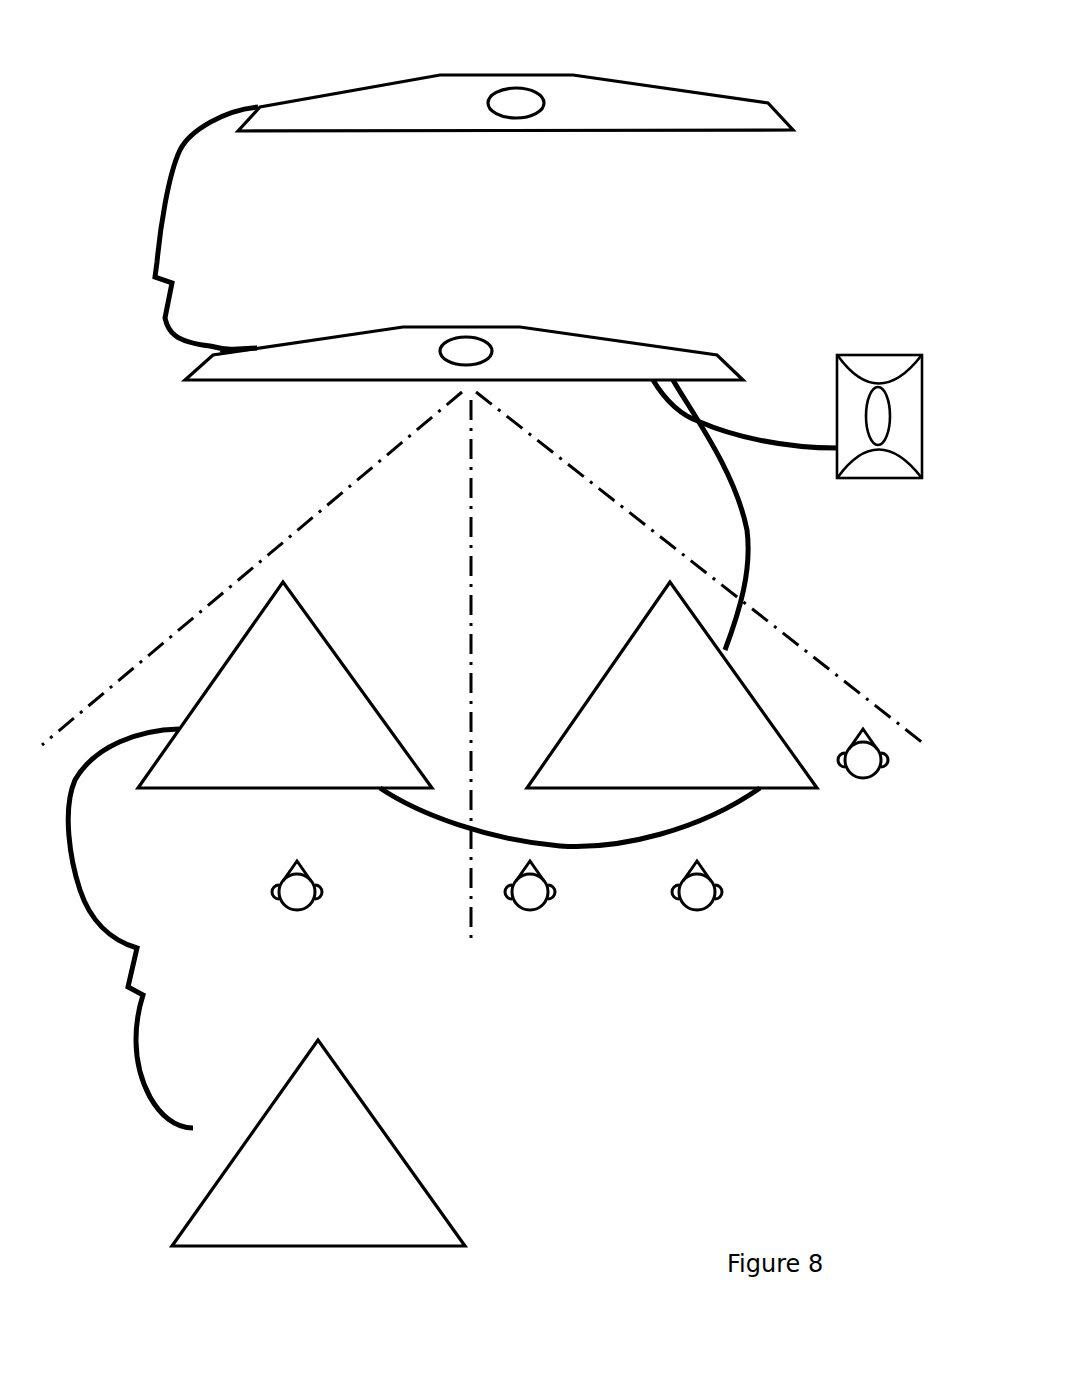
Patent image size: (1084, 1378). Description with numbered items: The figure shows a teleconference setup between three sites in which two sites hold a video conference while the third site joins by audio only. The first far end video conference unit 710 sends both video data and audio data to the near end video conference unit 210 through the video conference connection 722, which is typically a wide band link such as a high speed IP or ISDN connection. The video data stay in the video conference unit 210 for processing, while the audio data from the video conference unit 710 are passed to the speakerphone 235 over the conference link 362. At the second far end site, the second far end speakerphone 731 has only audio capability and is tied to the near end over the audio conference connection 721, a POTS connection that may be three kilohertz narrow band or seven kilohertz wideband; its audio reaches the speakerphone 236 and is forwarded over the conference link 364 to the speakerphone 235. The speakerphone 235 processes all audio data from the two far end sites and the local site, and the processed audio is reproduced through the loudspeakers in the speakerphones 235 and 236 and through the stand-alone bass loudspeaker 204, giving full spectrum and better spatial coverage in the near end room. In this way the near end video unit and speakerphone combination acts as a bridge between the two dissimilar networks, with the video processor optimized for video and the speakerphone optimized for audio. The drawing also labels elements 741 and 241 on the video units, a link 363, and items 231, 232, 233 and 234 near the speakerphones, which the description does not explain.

The first far end video conference unit 710 is at (590, 75).
The aperture in upper plate 741 is at (492, 113).
The video conference connection 722 is at (170, 222).
The video conference unit 210 is at (572, 330).
The aperture in plate 241 is at (440, 352).
The stand-alone bass loudspeaker 204 is at (840, 355).
The cable to processing unit 363 is at (728, 432).
The conference link 362 is at (712, 450).
The conference link 364 is at (515, 838).
The speakerphone 236 is at (195, 790).
The speakerphone 235 is at (778, 790).
The second far end speakerphone 731 is at (312, 1247).
The audio conference connection 721 is at (146, 998).
The observer 231 is at (870, 780).
The observer 232 is at (703, 913).
The observer 233 is at (536, 913).
The observer 234 is at (303, 913).